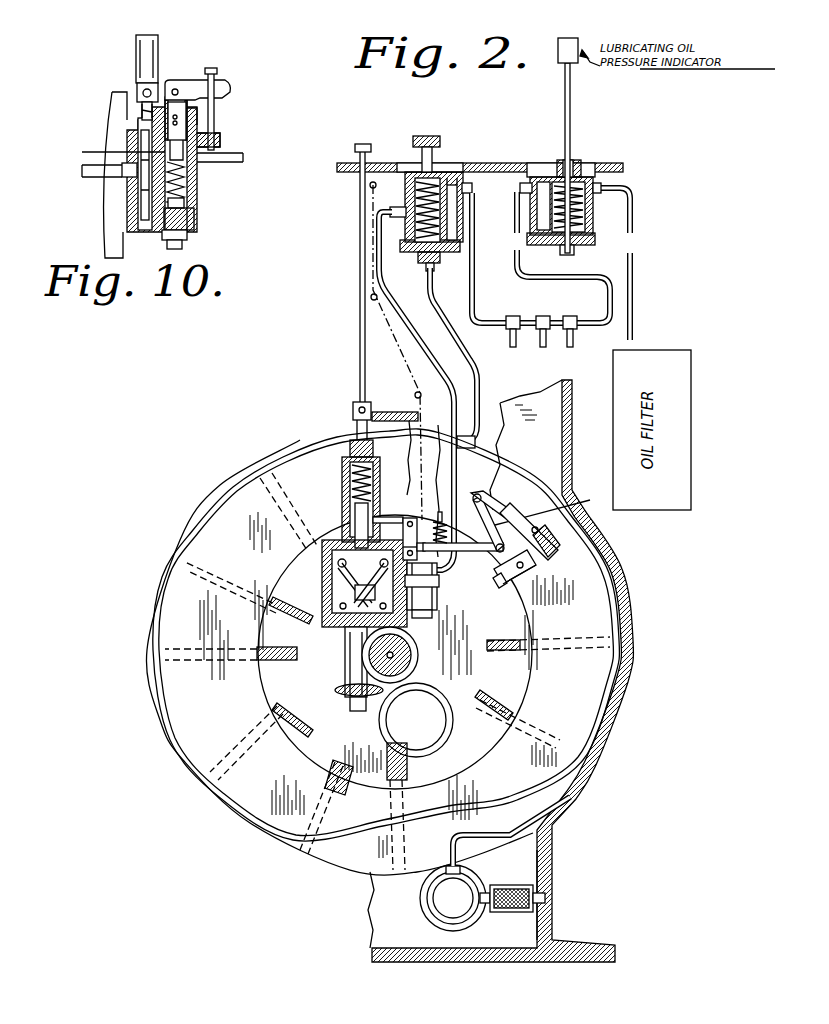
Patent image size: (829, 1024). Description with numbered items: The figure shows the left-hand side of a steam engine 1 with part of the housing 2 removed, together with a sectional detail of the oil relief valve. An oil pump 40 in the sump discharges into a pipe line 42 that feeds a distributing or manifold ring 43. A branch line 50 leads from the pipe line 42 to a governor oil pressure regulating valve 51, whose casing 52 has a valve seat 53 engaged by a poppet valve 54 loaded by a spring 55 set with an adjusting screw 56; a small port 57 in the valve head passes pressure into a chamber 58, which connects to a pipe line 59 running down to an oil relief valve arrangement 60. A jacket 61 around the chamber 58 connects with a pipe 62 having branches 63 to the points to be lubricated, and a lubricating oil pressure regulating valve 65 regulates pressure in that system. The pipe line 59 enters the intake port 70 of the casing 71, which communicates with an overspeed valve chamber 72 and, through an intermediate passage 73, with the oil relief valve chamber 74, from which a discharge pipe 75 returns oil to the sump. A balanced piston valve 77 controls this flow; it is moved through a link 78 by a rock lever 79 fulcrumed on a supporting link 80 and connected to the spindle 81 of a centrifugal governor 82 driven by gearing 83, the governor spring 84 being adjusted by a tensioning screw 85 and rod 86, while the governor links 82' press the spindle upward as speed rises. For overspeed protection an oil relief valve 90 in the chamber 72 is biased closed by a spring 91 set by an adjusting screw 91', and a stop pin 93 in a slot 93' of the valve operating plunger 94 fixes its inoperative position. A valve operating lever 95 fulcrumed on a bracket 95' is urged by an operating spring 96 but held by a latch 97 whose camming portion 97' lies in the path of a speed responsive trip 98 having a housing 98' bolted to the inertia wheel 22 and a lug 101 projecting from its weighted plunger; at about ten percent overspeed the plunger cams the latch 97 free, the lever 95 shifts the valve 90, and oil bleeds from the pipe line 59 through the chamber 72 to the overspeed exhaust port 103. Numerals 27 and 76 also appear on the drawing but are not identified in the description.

In FIG. 2, the steam engine 1 is at (588, 802).
In FIG. 2, the housing 2 is at (548, 930).
In FIG. 2, the inertia wheel 22 is at (186, 700).
In FIG. 2, the pump body 27 is at (340, 592).
In FIG. 2, the oil pump 40 is at (420, 900).
In FIG. 2, the pipe line 42 is at (200, 505).
In FIG. 2, the distributing or manifold ring 43 is at (418, 650).
In FIG. 2, the branch line 50 is at (481, 385).
In FIG. 2, the governor oil pressure regulating valve 51 is at (460, 238).
In FIG. 2, the casing 52 is at (405, 192).
In FIG. 2, the valve seat 53 is at (434, 272).
In FIG. 10, the poppet valve 54 is at (110, 110).
In FIG. 2, the poppet valve 54 is at (395, 218).
In FIG. 2, the spring 55 is at (418, 200).
In FIG. 2, the adjusting screw 56 is at (428, 135).
In FIG. 2, the small port 57 is at (424, 255).
In FIG. 2, the chamber 58 is at (452, 165).
In FIG. 10, the pipe line 59 is at (244, 157).
In FIG. 2, the pipe line 59 is at (376, 229).
In FIG. 10, the oil relief valve arrangement 60 is at (127, 140).
In FIG. 2, the oil relief valve arrangement 60 is at (440, 594).
In FIG. 2, the jacket 61 is at (457, 208).
In FIG. 2, the pipe 62 is at (476, 308).
In FIG. 2, the branches 63 is at (578, 343).
In FIG. 2, the lubricating oil pressure regulating valve 65 is at (603, 186).
In FIG. 10, the intake port 70 is at (221, 140).
In FIG. 10, the casing 71 is at (196, 220).
In FIG. 10, the overspeed valve chamber 72 is at (197, 117).
In FIG. 10, the intermediate passage or port 73 is at (145, 115).
In FIG. 10, the oil relief valve chamber 74 is at (130, 152).
In FIG. 10, the discharge pipe 75 is at (85, 172).
In FIG. 10, the inlet nipple 76 is at (122, 171).
In FIG. 10, the balanced piston valve 77 is at (145, 183).
In FIG. 2, the balanced piston valve 77 is at (422, 590).
In FIG. 10, the link 78 is at (150, 60).
In FIG. 2, the link 78 is at (420, 545).
In FIG. 2, the rock lever 79 is at (408, 518).
In FIG. 2, the supporting link 80 is at (388, 517).
In FIG. 2, the spindle 81 is at (355, 521).
In FIG. 2, the centrifugal governor 82 is at (340, 584).
In FIG. 2, the links 82' is at (342, 601).
In FIG. 2, the gearing 83 is at (336, 688).
In FIG. 2, the governor spring 84 is at (342, 480).
In FIG. 2, the tensioning screw 85 is at (353, 440).
In FIG. 2, the rod 86 is at (367, 380).
In FIG. 10, the oil relief valve 90 is at (189, 185).
In FIG. 10, the spring 91 is at (201, 199).
In FIG. 10, the adjusting screw 91' is at (205, 238).
In FIG. 10, the stop pin 93 is at (246, 111).
In FIG. 10, the slot 93' is at (241, 84).
In FIG. 10, the valve operating plunger 94 is at (185, 85).
In FIG. 10, the valve operating lever 95 is at (209, 72).
In FIG. 2, the valve operating lever 95 is at (463, 539).
In FIG. 2, the bracket 95' is at (542, 482).
In FIG. 2, the operating spring 96 is at (448, 533).
In FIG. 2, the latch 97 is at (542, 498).
In FIG. 2, the laterally offset camming portion 97' is at (575, 532).
In FIG. 2, the speed responsive trip 98 is at (532, 596).
In FIG. 2, the casing or housing 98' is at (498, 600).
In FIG. 2, the lug 101 is at (536, 565).
In FIG. 10, the overspeed exhaust port 103 is at (185, 163).